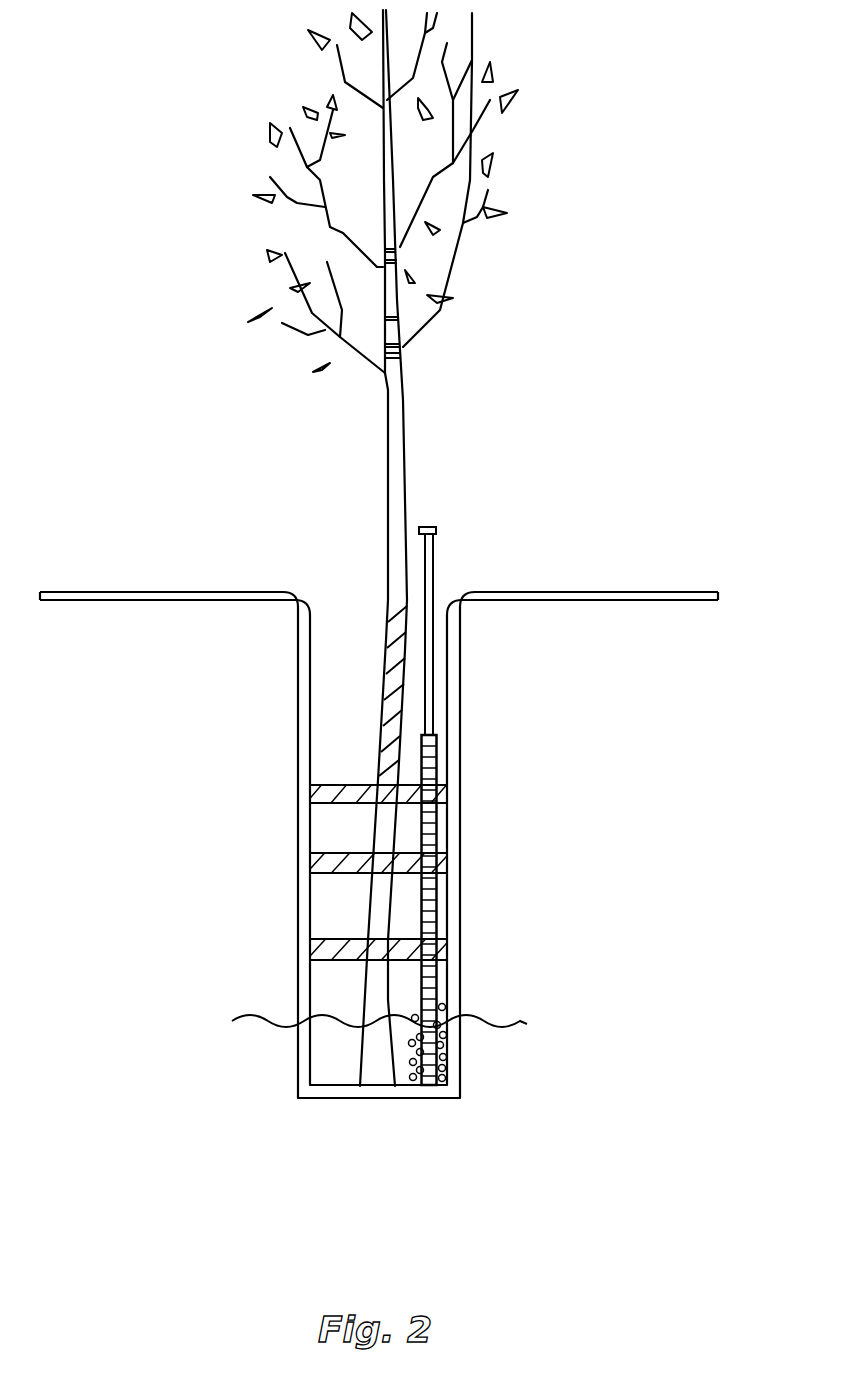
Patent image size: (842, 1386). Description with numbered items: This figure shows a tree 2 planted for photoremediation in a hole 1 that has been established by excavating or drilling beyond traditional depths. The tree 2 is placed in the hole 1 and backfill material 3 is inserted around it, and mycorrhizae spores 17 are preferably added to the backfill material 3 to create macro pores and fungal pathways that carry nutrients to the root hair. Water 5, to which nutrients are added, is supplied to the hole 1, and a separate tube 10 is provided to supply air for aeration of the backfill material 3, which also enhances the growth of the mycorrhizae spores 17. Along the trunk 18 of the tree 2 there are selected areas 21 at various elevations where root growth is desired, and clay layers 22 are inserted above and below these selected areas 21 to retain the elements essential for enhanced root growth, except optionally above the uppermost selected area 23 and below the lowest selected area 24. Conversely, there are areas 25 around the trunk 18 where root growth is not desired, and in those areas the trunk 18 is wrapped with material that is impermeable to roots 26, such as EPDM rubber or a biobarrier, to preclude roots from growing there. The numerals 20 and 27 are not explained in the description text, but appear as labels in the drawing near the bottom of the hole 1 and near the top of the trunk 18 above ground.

The hole 1 is at (320, 1100).
The tree 2 is at (403, 377).
The backfill material 3 is at (332, 753).
The water 5 is at (340, 828).
The tube 10 is at (433, 527).
The mycorrhizae spores 17 is at (332, 895).
The trunk 18 is at (393, 827).
The container bottom 20 is at (297, 1093).
The selected areas 21 is at (333, 980).
The clay layers 22 is at (440, 790).
The uppermost selected area 23 is at (340, 658).
The lowest selected area 24 is at (293, 1077).
The areas where root growth is not desired 25 is at (387, 693).
The material that is impermeable to roots 26 is at (167, 717).
The opening 27 is at (360, 593).